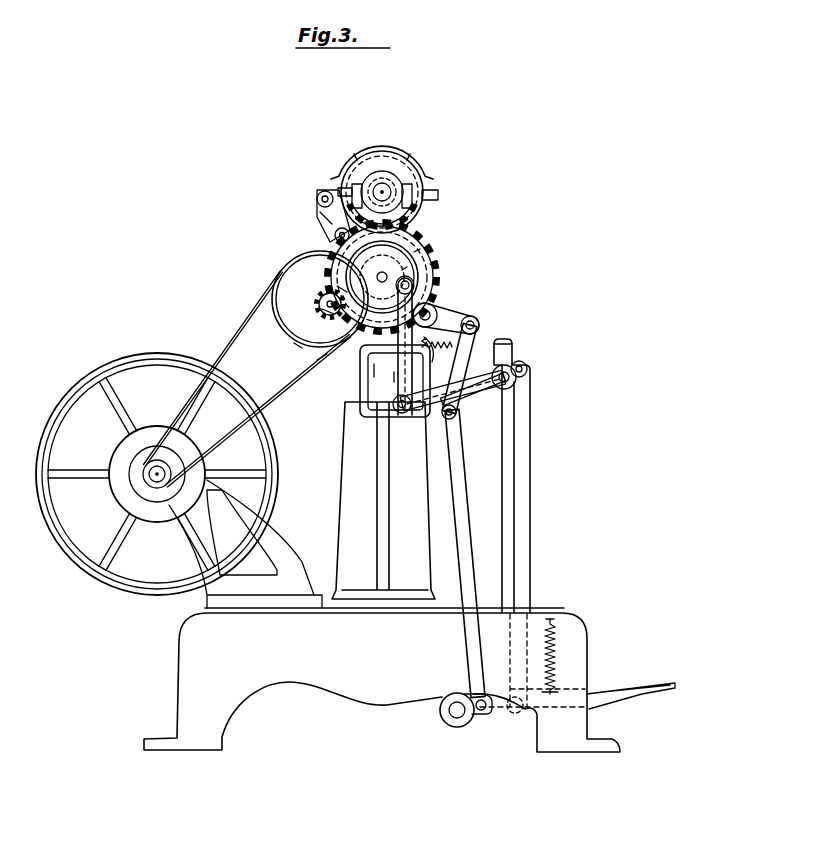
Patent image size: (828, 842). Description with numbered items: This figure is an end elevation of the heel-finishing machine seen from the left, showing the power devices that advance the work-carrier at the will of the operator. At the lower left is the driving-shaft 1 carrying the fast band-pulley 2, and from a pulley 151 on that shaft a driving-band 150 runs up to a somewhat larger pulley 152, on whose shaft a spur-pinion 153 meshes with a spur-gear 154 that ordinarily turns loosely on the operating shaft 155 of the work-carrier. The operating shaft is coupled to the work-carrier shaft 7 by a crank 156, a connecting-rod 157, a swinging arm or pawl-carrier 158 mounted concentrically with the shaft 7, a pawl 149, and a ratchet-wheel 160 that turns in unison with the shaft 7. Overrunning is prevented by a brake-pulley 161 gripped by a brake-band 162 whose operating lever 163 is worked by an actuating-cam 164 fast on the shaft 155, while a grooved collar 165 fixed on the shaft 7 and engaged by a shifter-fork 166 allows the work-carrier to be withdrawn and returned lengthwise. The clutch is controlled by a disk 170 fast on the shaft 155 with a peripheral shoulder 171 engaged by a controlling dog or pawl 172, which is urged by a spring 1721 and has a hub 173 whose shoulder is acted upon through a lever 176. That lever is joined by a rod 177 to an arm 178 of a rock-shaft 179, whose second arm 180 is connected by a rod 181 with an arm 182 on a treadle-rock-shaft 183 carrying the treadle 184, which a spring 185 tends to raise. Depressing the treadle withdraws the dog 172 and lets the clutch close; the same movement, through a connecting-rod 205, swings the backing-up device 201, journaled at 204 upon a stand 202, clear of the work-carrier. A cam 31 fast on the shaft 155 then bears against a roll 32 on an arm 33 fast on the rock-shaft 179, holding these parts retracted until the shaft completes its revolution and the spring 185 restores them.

The driving-shaft 1 is at (150, 475).
The fast band-pulley 2 is at (110, 436).
The work-carrier shaft 7 is at (392, 185).
The cam 31 is at (320, 307).
The roll 32 is at (430, 265).
The arm 33 is at (410, 342).
The pawl 149 is at (322, 222).
The driving-band 150 is at (292, 392).
The pulley 151 is at (170, 456).
The pulley 152 is at (292, 341).
The spur-pinion 153 is at (323, 317).
The spur-gear 154 is at (315, 358).
The operating shaft 155 is at (419, 247).
The crank 156 is at (400, 336).
The connecting-rod 157 is at (312, 252).
The swinging-arm or pawl-carrier 158 is at (318, 192).
The ratchet-wheel 160 is at (375, 178).
The brake-pulley 161 is at (428, 171).
The brake-band 162 is at (333, 240).
The operating lever 163 is at (440, 231).
The actuating-cam 164 is at (343, 271).
The grooved collar 165 is at (386, 178).
The shifter-fork 166 is at (412, 226).
The disk 170 is at (336, 284).
The shoulder 171 is at (434, 265).
The controlling dog or pawl 172 is at (436, 281).
The spring 1721 is at (397, 348).
The hub 173 is at (440, 300).
The lever 176 is at (455, 312).
The rod 177 is at (475, 352).
The arm 178 is at (413, 422).
The rock-shaft 179 is at (398, 410).
The arm 180 is at (494, 389).
The rod 181 is at (472, 542).
The arm 182 is at (461, 690).
The treadle-rock-shaft 183 is at (450, 713).
The treadle 184 is at (633, 678).
The spring 185 is at (558, 630).
The backing-up device 201 is at (512, 346).
The stand 202 is at (498, 390).
The journal 204 is at (516, 376).
The connecting-rod 205 is at (532, 478).